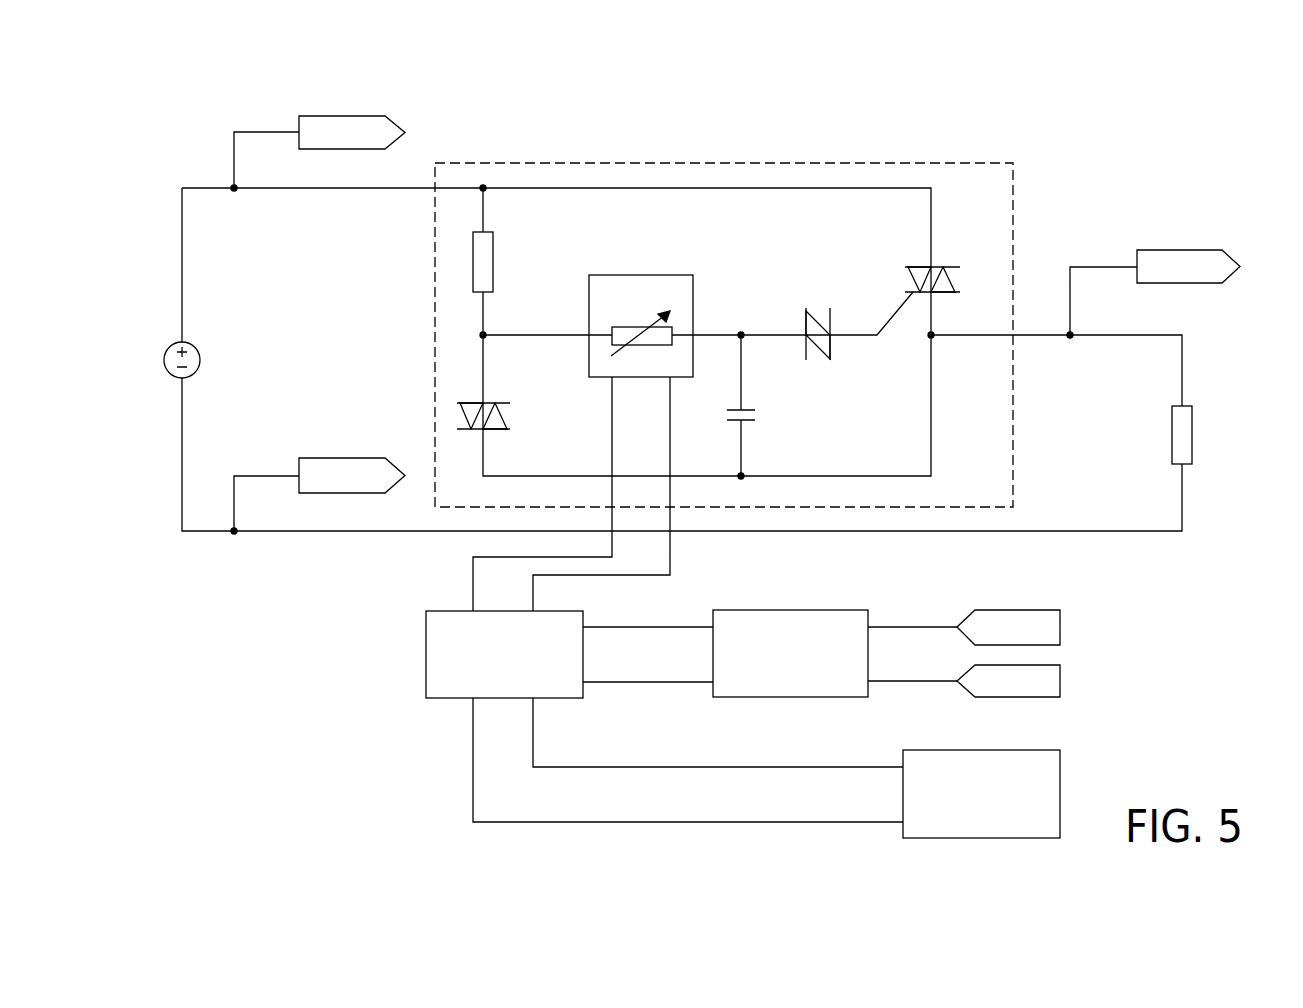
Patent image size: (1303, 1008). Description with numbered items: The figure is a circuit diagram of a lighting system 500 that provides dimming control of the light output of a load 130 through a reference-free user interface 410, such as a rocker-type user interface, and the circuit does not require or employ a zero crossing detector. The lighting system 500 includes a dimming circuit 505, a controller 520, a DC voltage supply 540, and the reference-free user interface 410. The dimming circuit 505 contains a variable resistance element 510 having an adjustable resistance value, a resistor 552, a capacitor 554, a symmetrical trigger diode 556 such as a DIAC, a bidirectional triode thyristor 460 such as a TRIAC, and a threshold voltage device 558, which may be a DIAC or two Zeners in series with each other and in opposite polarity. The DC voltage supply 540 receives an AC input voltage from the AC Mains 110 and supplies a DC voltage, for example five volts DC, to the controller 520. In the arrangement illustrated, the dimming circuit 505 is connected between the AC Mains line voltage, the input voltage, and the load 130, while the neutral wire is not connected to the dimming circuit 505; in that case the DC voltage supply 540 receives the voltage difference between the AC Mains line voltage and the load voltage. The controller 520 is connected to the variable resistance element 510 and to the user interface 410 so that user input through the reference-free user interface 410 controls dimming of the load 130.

The lighting system 500 is at (1128, 178).
The dimming circuit 505 is at (1013, 190).
The variable resistance element 510 is at (643, 275).
The resistor 552 is at (493, 250).
The capacitor 554 is at (755, 415).
The symmetrical trigger diode 556 is at (818, 310).
The threshold voltage device 558 is at (510, 417).
The bidirectional triode thyristor 460 is at (901, 265).
The AC Mains 110 is at (200, 360).
The load 130 is at (1165, 414).
The controller 520 is at (426, 634).
The DC voltage supply 540 is at (806, 610).
The reference-free user interface 410 is at (931, 750).